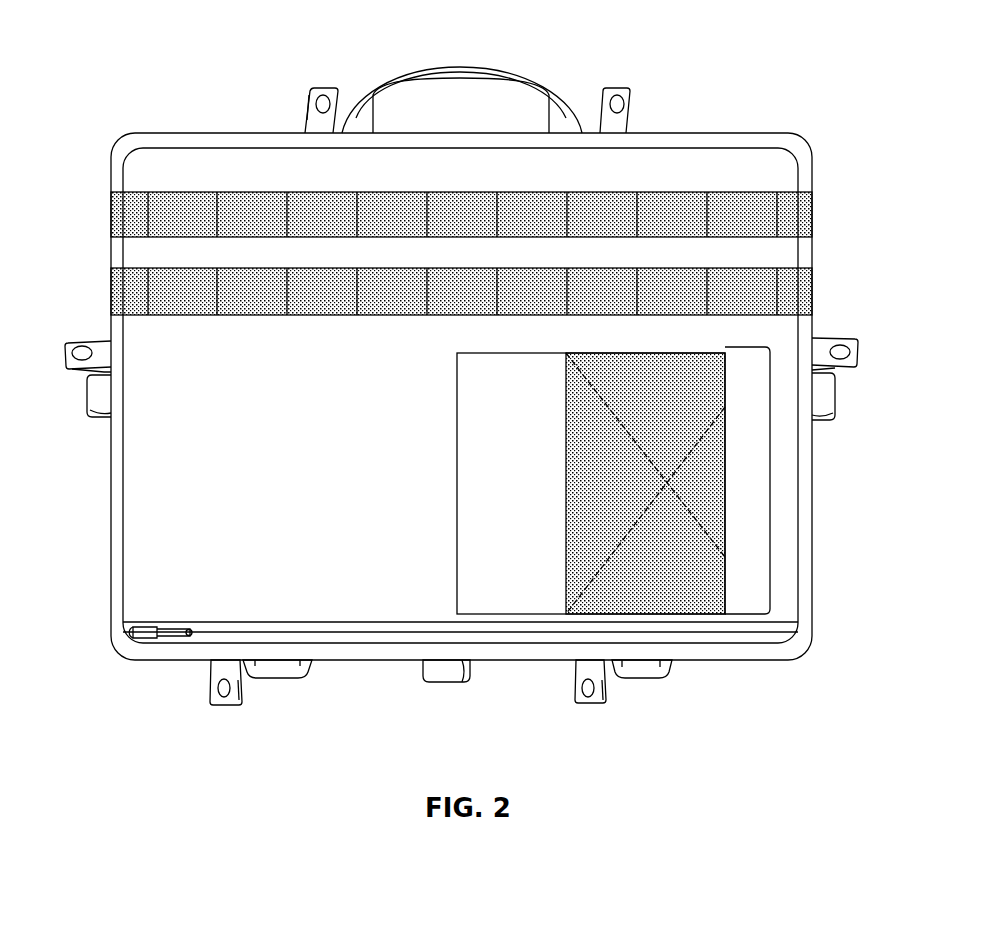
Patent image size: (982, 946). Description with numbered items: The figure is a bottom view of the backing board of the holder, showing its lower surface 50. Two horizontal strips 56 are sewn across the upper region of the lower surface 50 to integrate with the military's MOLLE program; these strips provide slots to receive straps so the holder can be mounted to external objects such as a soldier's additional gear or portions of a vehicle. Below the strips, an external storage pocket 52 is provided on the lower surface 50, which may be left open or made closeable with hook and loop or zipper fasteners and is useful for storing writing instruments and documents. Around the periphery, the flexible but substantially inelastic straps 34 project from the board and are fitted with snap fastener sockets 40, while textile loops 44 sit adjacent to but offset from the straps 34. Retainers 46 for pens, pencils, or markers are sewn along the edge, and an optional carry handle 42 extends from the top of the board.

The straps 34 is at (630, 127).
The snap fastener sockets 40 is at (620, 103).
The carry handle 42 is at (432, 69).
The textile loops 44 is at (645, 672).
The retainers 46 is at (92, 400).
The lower surface 50 is at (345, 500).
The external storage pockets 52 is at (483, 598).
The strips 56 is at (190, 210).